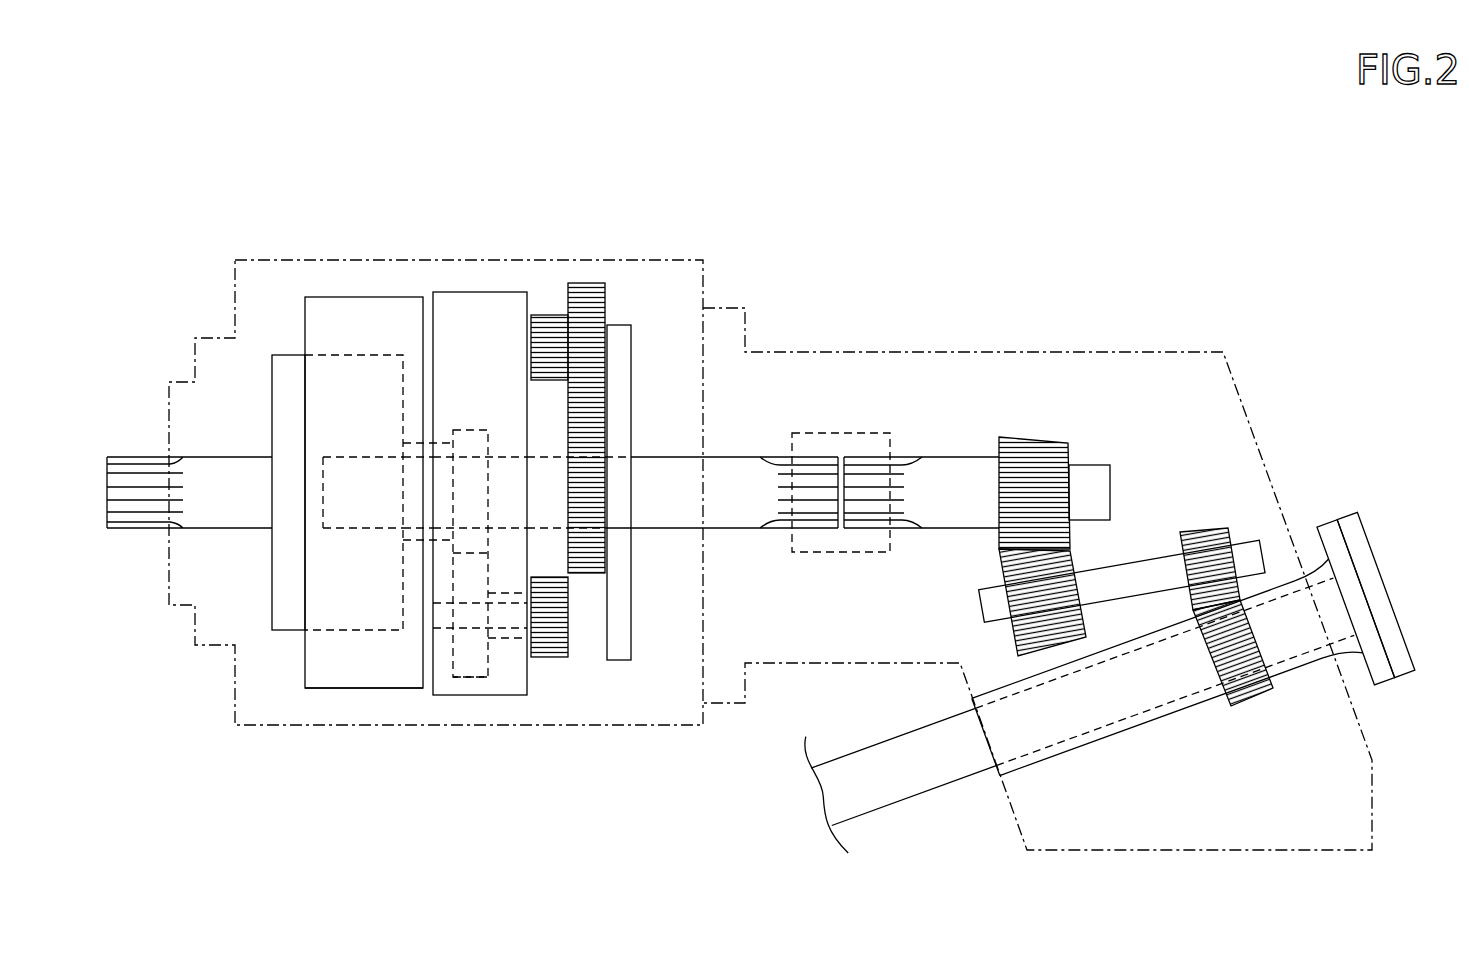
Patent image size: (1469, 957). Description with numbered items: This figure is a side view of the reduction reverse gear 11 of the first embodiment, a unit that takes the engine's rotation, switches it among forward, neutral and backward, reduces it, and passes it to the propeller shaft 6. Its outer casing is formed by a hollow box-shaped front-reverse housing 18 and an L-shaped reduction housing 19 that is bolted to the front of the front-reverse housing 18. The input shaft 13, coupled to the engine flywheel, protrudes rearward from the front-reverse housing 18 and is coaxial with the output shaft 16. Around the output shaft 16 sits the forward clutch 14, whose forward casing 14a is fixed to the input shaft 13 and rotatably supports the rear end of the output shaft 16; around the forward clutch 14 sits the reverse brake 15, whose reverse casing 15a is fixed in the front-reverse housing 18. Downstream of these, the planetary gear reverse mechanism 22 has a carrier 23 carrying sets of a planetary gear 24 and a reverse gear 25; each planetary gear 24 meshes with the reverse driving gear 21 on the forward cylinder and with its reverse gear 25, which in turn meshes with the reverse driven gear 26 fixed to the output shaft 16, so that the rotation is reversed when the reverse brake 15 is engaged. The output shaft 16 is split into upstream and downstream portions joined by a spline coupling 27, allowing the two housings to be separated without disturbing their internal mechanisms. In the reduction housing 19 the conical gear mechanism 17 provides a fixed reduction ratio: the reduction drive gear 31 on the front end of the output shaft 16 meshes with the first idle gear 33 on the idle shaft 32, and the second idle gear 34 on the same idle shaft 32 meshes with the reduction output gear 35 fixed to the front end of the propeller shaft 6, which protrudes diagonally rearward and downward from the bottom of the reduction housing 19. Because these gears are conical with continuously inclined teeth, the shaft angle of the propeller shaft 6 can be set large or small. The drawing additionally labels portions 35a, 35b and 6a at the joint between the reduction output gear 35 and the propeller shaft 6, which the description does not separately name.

The propeller shaft 6 is at (918, 775).
The flange of propeller shaft 6a is at (1380, 595).
The reduction reverse gear 11 is at (817, 165).
The input shaft 13 is at (144, 528).
The forward clutch 14 is at (262, 617).
The forward casing 14a is at (340, 355).
The reverse brake 15 is at (368, 312).
The reverse casing 15a is at (385, 677).
The output shaft 16 is at (733, 487).
The conical gear mechanism 17 is at (1187, 483).
The front-reverse housing 18 is at (324, 725).
The reduction housing 19 is at (949, 352).
The reverse driving gear 21 is at (468, 430).
The planetary gear reverse mechanism 22 is at (614, 277).
The carrier 23 is at (502, 695).
The planetary gear 24 is at (470, 677).
The reverse gear 25 is at (585, 290).
The reverse driven gear 26 is at (586, 573).
The coupling 27 is at (828, 552).
The reduction drive gear 31 is at (1033, 440).
The idle shaft 32 is at (1105, 575).
The first idle gear 33 is at (1012, 641).
The second idle gear 34 is at (1220, 528).
The reduction output gear 35 is at (1252, 705).
The output sleeve 35a is at (1168, 720).
The output flange 35b is at (1383, 668).